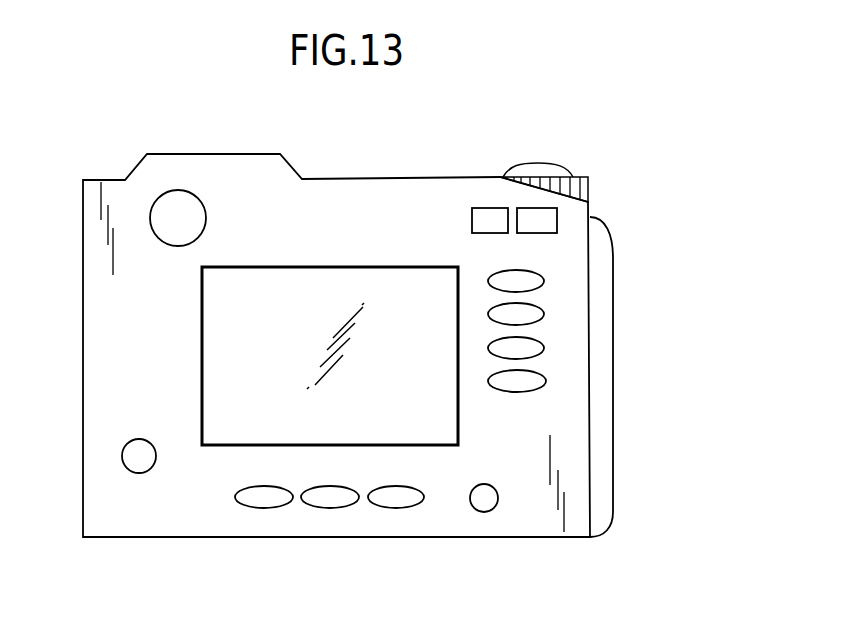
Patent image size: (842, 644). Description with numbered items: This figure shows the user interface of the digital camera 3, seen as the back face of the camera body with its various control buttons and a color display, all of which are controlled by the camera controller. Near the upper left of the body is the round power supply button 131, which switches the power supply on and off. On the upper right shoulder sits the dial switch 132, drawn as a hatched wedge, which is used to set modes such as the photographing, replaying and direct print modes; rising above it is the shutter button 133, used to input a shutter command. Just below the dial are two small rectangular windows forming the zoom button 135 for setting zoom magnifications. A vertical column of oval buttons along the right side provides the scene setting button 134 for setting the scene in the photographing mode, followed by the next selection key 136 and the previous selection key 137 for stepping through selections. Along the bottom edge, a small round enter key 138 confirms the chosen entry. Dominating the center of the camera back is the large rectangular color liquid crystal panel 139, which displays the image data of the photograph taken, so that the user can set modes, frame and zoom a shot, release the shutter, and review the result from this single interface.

The digital camera 3 is at (295, 152).
The power supply button 131 is at (205, 218).
The dial switch 132 is at (590, 187).
The shutter button 133 is at (535, 172).
The scene setting button 134 is at (540, 278).
The zoom button 135 is at (532, 215).
The next selection key 136 is at (540, 311).
The previous selection key 137 is at (540, 345).
The enter key 138 is at (484, 511).
The color liquid crystal panel 139 is at (212, 372).